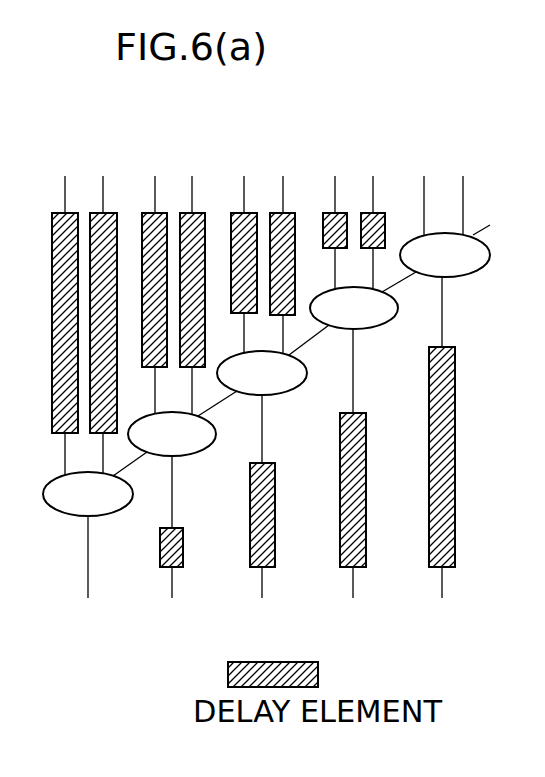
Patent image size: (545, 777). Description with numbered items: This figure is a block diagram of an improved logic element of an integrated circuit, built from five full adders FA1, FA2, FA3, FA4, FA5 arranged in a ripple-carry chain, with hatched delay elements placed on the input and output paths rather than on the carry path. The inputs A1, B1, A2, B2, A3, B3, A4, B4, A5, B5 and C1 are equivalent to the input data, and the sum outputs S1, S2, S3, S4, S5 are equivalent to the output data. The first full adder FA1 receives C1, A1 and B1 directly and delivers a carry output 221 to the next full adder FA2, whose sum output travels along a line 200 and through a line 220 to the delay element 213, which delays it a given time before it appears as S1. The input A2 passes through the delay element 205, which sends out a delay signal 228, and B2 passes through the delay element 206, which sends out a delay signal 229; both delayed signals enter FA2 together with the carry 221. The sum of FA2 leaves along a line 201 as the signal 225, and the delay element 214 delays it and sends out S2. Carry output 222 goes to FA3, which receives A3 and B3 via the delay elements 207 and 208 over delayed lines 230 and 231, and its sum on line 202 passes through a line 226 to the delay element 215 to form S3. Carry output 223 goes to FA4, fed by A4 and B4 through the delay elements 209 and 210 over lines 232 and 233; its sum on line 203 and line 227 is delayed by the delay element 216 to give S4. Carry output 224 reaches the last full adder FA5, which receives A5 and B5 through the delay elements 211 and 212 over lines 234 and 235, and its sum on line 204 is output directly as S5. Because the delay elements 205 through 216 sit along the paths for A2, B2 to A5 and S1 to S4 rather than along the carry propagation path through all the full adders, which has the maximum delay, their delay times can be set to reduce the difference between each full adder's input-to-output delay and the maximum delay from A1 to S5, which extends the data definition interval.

The sum output line of full adder FA1 200 is at (472, 300).
The sum output line of full adder FA2 201 is at (355, 336).
The sum output line of full adder FA3 202 is at (264, 404).
The sum output line of full adder FA4 203 is at (174, 463).
The sum output line of full adder FA5 204 is at (100, 513).
The delay element 205 is at (402, 210).
The delay element 206 is at (323, 222).
The delay element 207 is at (295, 246).
The delay element 208 is at (231, 298).
The delay element 209 is at (219, 210).
The delay element 210 is at (142, 223).
The delay element 211 is at (90, 284).
The delay element 212 is at (52, 223).
The delay element 213 is at (429, 493).
The delay element 214 is at (366, 557).
The delay element 215 is at (275, 560).
The delay element 216 is at (183, 557).
The output signal line to delay element 213 220 is at (443, 330).
The carry output 221 is at (407, 293).
The carry output 222 is at (317, 349).
The carry output 223 is at (227, 413).
The carry output 224 is at (140, 473).
The signal 225 is at (354, 389).
The signal line to delay element 215 226 is at (263, 447).
The signal line to delay element 216 227 is at (173, 510).
The delay signal 228 is at (390, 271).
The delay signal 229 is at (352, 268).
The delayed input line A3 to FA3 230 is at (299, 334).
The delayed input line B3 to FA3 231 is at (259, 333).
The delayed input line A4 to FA4 232 is at (175, 390).
The delayed input line B4 to FA4 233 is at (136, 390).
The delayed input line A5 to FA5 234 is at (85, 453).
The delayed input line B5 to FA5 235 is at (45, 454).
The full adder FA1 is at (445, 255).
The full adder FA2 is at (354, 308).
The full adder FA3 is at (262, 373).
The full adder FA4 is at (172, 434).
The full adder FA5 is at (88, 494).
The carry input C1 is at (491, 212).
The input data A1 is at (462, 188).
The input data B1 is at (424, 189).
The input data A2 is at (375, 177).
The input data B2 is at (337, 177).
The input data A3 is at (284, 177).
The input data B3 is at (245, 177).
The input data A4 is at (194, 177).
The input data B4 is at (156, 177).
The input data A5 is at (104, 177).
The input data B5 is at (65, 177).
The sum output S1 is at (440, 604).
The sum output S2 is at (352, 604).
The sum output S3 is at (263, 604).
The sum output S4 is at (172, 604).
The sum output S5 is at (86, 619).